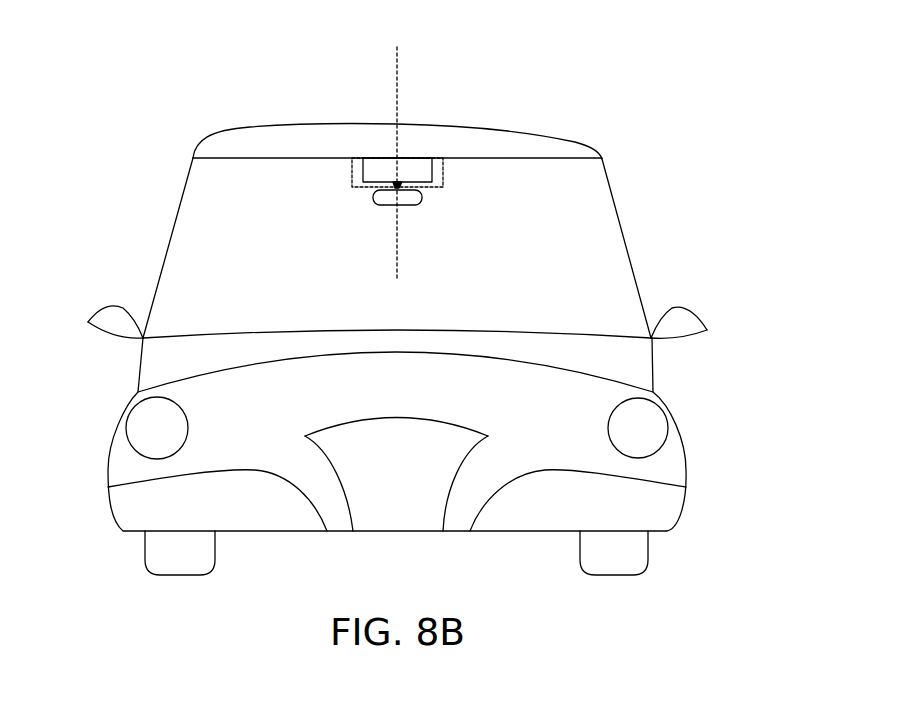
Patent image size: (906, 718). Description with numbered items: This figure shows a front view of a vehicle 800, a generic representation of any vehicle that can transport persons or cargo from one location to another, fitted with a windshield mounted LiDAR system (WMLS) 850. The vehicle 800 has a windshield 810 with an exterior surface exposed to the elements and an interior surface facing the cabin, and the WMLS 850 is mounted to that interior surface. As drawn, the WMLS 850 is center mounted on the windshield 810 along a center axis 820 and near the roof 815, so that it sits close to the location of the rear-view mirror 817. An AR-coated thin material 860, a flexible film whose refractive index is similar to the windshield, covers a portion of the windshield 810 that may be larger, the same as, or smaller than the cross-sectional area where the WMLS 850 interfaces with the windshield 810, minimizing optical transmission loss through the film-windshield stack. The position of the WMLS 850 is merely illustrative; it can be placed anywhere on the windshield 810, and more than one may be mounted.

The vehicle 800 is at (389, 302).
The windshield 810 is at (625, 228).
The roof 815 is at (287, 128).
The center axis 820 is at (398, 73).
The windshield mounted LiDAR system 850 is at (350, 168).
The AR-coated thin material 860 is at (443, 165).
The rear-view mirror 817 is at (422, 197).